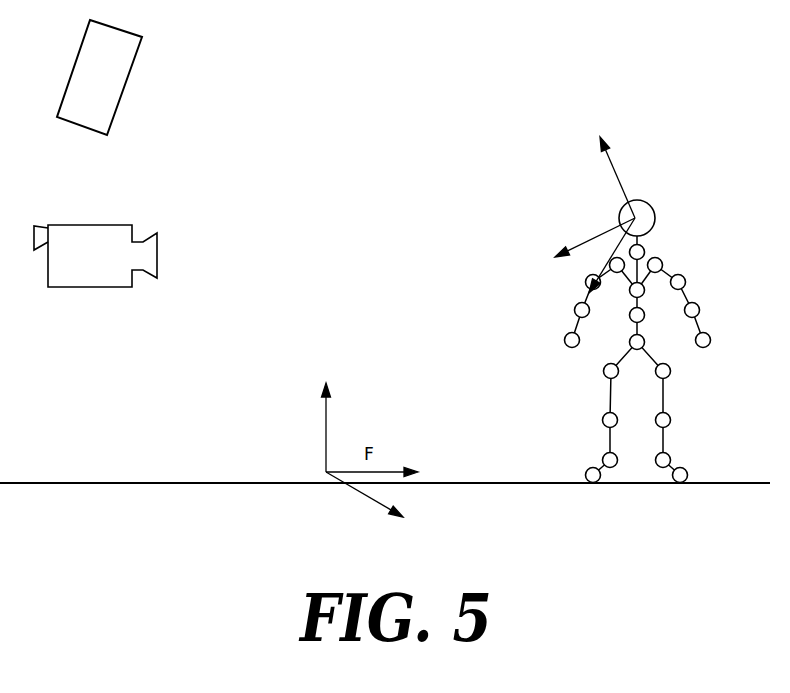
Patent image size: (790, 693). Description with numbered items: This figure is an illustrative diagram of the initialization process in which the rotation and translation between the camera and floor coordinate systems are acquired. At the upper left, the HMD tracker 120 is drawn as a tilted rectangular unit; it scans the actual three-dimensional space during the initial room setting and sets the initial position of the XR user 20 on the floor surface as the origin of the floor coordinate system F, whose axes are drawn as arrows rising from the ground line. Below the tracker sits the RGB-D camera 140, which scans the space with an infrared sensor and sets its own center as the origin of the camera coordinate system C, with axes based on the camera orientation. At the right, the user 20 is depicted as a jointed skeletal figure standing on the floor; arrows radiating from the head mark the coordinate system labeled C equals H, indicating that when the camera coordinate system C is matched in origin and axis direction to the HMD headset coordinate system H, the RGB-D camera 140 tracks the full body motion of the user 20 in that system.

The HMD tracker 120 is at (127, 78).
The RGB-D camera 140 is at (97, 227).
The XR user 20 is at (637, 202).